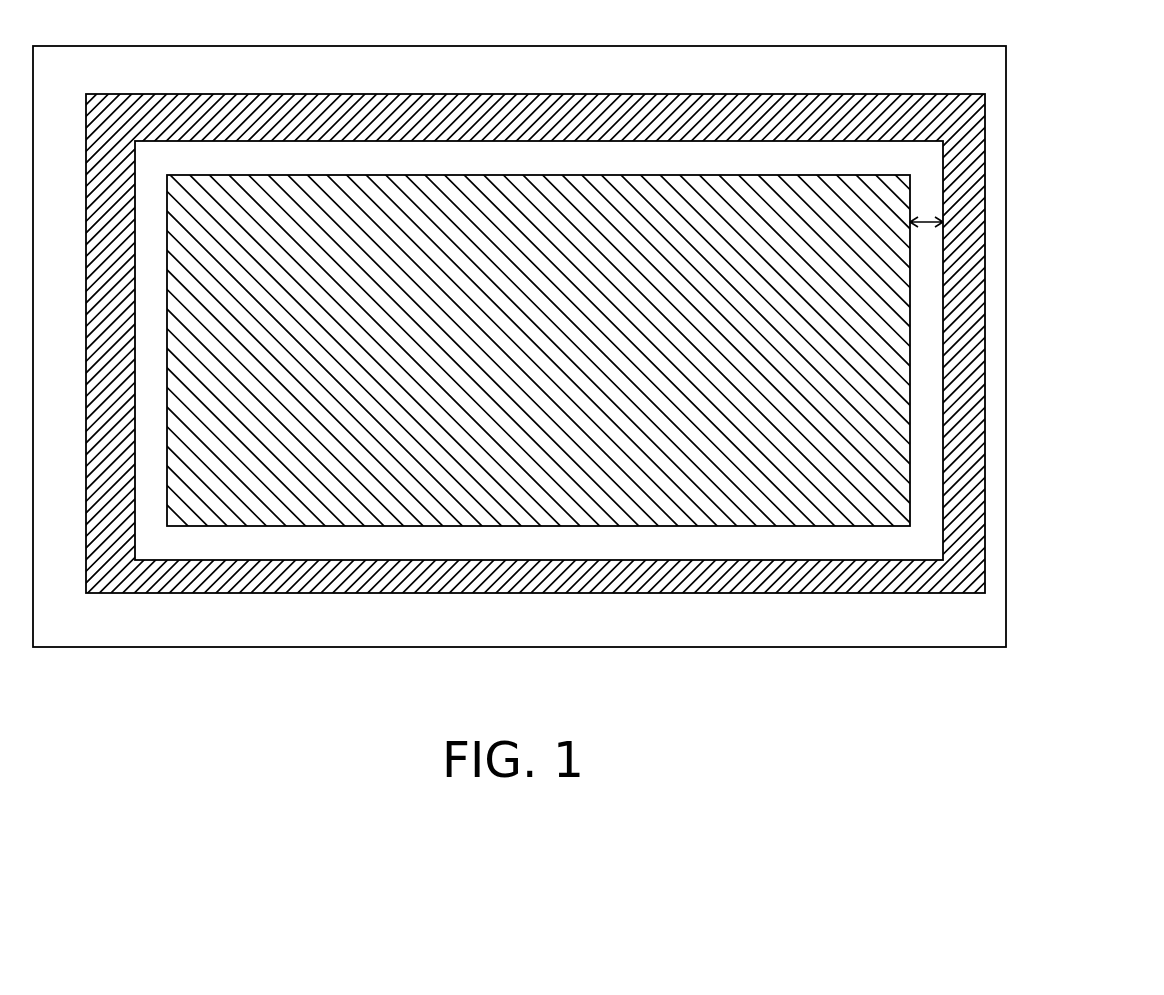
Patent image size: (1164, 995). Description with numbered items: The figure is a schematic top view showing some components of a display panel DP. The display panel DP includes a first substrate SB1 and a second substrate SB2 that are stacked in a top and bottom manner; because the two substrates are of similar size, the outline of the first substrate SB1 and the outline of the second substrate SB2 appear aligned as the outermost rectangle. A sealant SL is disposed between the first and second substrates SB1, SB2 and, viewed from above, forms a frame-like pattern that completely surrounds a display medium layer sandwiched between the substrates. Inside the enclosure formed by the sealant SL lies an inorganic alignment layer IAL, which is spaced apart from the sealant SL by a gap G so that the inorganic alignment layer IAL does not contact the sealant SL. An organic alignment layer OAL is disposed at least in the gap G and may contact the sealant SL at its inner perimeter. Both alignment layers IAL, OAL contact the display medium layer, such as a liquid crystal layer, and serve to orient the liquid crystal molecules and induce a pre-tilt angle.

The first substrate SB1 is at (585, 344).
The second substrate SB2 is at (993, 67).
The sealant SL is at (962, 193).
The gap G is at (927, 226).
The inorganic alignment layer IAL is at (877, 390).
The organic alignment layer OAL is at (925, 506).
The display panel DP is at (582, 349).